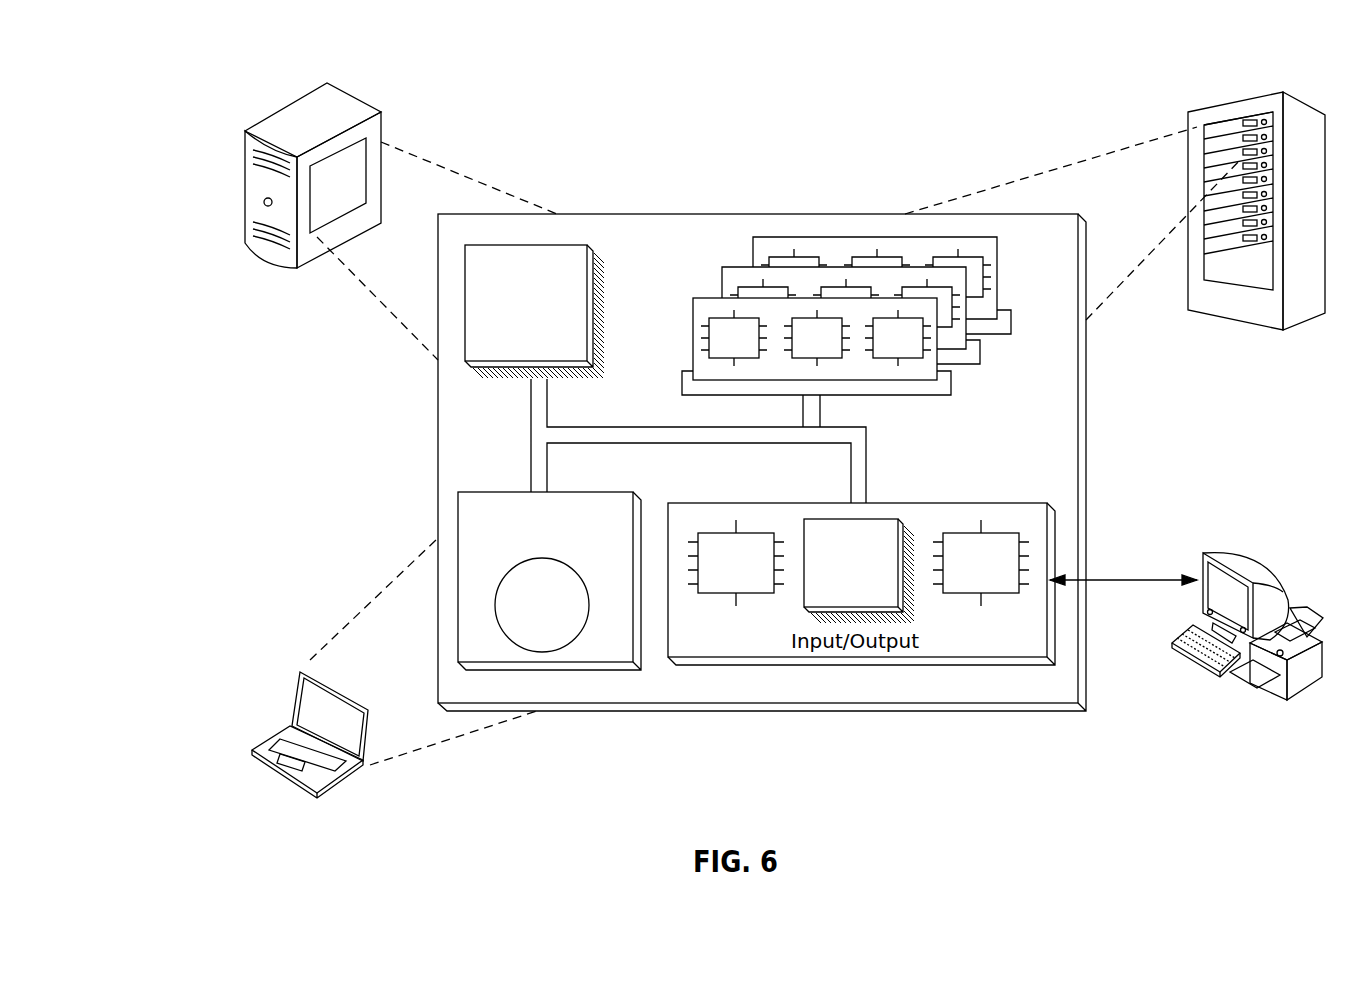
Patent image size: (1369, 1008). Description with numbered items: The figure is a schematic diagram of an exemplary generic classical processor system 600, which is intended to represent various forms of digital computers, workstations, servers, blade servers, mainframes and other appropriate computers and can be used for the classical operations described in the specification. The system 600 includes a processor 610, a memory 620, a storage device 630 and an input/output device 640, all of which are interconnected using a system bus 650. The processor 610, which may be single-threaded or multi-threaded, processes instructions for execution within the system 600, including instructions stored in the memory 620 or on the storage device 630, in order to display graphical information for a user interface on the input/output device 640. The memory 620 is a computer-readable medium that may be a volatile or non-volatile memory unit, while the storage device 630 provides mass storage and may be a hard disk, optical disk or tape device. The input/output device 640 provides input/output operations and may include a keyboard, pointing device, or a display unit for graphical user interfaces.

The system 600 is at (226, 84).
The processor 610 is at (506, 331).
The memory 620 is at (979, 383).
The storage device 630 is at (605, 552).
The input/output device 640 is at (1220, 552).
The system bus 650 is at (693, 445).